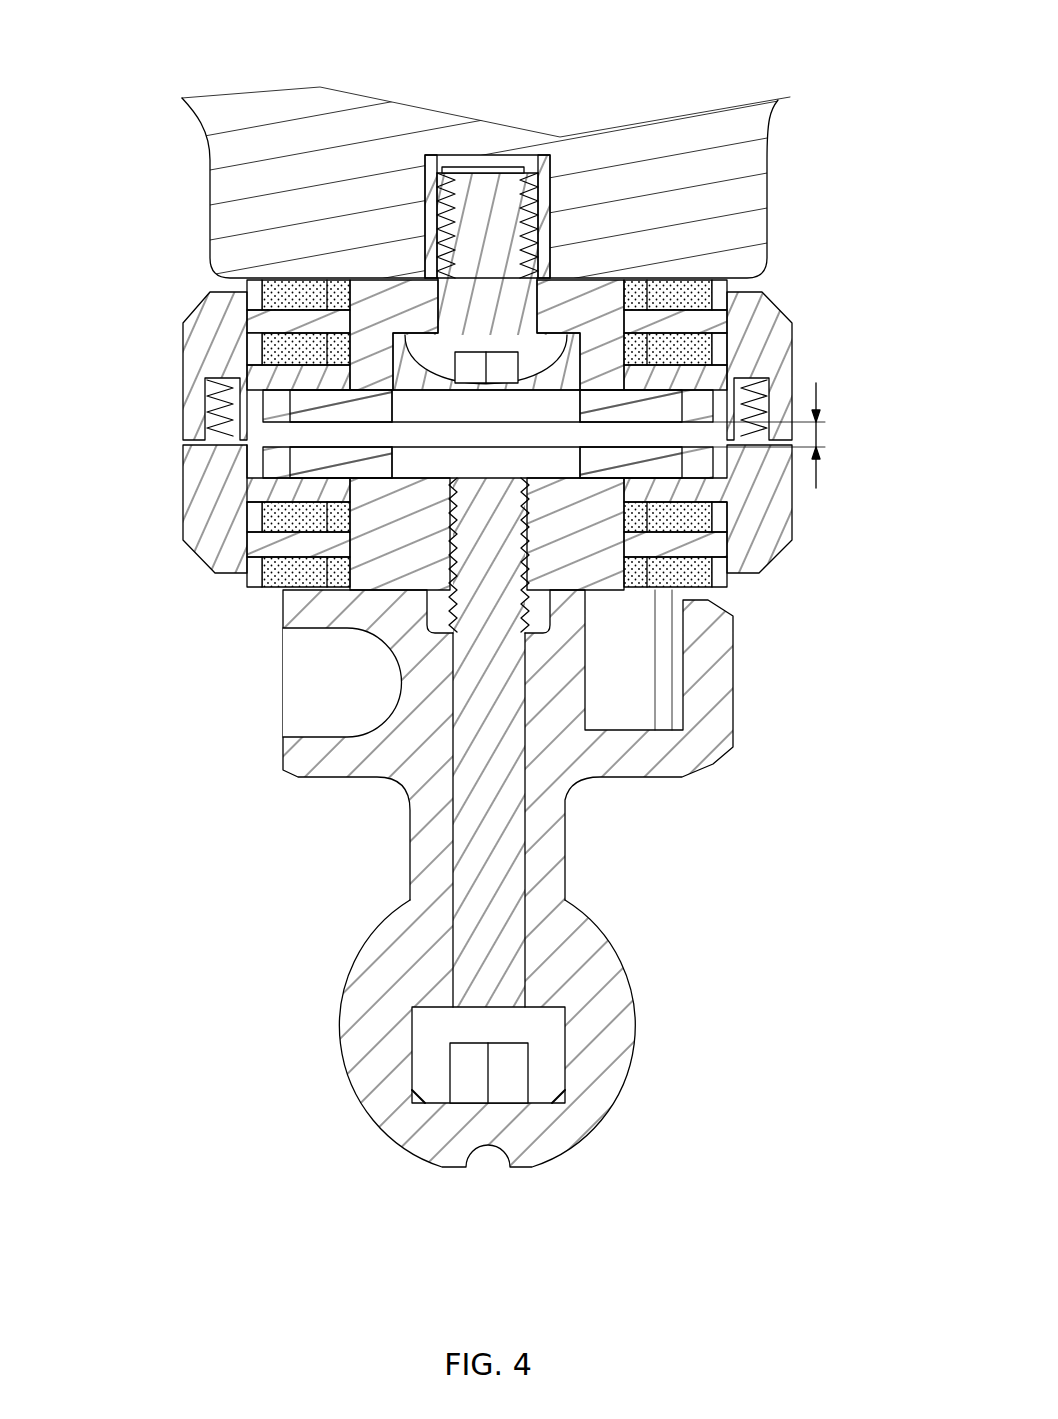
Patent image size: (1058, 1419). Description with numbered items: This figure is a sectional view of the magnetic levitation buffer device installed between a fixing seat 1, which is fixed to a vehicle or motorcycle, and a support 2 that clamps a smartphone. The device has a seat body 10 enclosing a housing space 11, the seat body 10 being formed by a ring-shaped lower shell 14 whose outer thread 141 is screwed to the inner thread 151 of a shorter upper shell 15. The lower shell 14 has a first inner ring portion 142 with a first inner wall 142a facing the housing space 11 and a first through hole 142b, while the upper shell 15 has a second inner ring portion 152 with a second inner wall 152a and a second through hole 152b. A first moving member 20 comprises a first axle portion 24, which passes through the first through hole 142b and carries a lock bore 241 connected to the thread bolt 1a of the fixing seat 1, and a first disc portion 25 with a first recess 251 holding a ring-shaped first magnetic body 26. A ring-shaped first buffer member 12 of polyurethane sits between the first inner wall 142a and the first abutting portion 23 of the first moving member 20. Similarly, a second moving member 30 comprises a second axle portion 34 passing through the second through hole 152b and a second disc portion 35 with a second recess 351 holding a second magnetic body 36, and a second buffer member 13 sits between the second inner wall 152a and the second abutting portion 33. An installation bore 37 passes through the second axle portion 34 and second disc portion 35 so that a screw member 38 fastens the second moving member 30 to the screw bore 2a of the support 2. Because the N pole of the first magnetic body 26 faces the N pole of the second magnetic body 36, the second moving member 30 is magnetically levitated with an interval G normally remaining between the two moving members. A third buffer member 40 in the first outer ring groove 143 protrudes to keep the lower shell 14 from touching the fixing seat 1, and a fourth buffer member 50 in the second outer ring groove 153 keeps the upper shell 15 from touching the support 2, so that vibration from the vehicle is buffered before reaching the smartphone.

The fixing seat 1 is at (657, 1016).
The thread bolt 1a is at (502, 880).
The support 2 is at (792, 131).
The screw bore 2a is at (508, 252).
The seat body 10 is at (192, 432).
The housing space 11 is at (253, 442).
The first buffer member 12 is at (765, 560).
The second buffer member 13 is at (686, 366).
The lower shell 14 is at (193, 488).
The upper shell 15 is at (193, 423).
The first moving member 20 is at (258, 573).
The first abutting portion 23 is at (303, 592).
The first axle portion 24 is at (605, 592).
The lock bore 241 is at (452, 565).
The first disc portion 25 is at (700, 463).
The first recess 251 is at (700, 527).
The first magnetic body 26 is at (715, 532).
The second moving member 30 is at (678, 384).
The second abutting portion 33 is at (662, 368).
The second axle portion 34 is at (605, 312).
The second disc portion 35 is at (273, 373).
The second magnetic body 36 is at (665, 404).
The installation bore 37 is at (402, 342).
The screw member 38 is at (550, 220).
The third buffer member 40 is at (690, 600).
The fourth buffer member 50 is at (250, 303).
The outer thread 141 is at (220, 408).
The inner thread 151 is at (752, 384).
The first inner ring portion 142 is at (662, 588).
The first inner wall 142a is at (265, 508).
The first through hole 142b is at (680, 590).
The first outer ring groove 143 is at (270, 560).
The second inner ring portion 152 is at (287, 323).
The second inner wall 152a is at (255, 360).
The second through hole 152b is at (345, 322).
The second outer ring groove 153 is at (282, 327).
The second recess 351 is at (268, 407).
The interval G is at (827, 438).